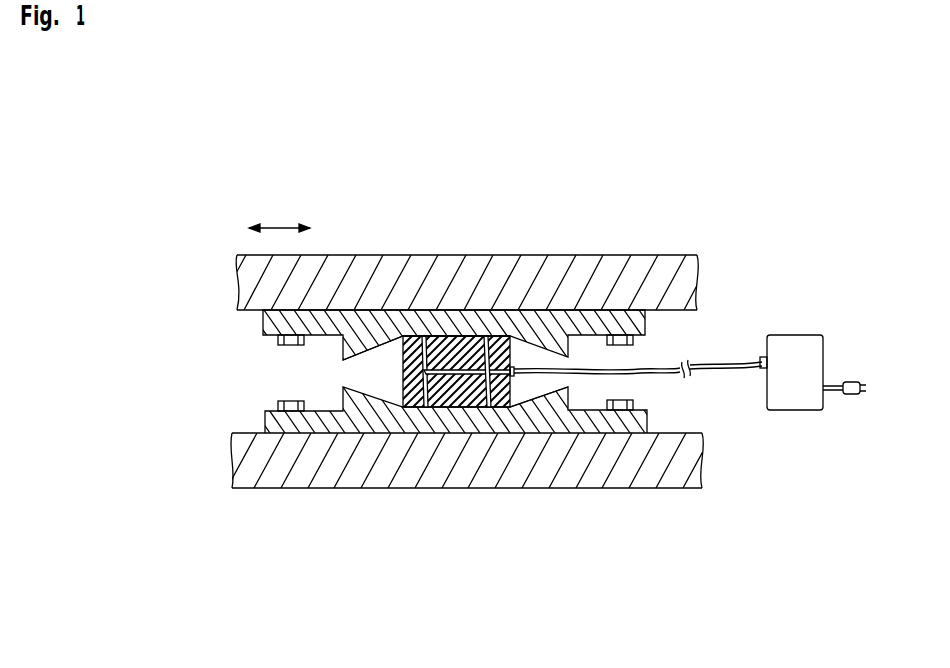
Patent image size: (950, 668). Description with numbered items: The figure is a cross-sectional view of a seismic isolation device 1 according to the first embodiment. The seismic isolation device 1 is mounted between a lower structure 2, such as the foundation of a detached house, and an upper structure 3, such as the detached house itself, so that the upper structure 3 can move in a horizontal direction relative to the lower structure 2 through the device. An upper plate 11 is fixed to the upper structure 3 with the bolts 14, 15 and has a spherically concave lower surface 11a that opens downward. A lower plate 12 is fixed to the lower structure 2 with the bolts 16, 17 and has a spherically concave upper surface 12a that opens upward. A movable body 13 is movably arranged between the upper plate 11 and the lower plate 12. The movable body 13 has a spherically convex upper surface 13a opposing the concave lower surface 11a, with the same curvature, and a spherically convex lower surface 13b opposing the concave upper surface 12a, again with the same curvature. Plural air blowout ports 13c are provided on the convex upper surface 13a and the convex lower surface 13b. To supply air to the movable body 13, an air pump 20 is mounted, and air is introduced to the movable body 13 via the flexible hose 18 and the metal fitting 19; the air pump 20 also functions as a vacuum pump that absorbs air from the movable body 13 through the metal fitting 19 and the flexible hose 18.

The seismic isolation device 1 is at (218, 333).
The lower structure 2 is at (666, 488).
The upper structure 3 is at (653, 255).
The upper plate 11 is at (558, 310).
The spherically concave lower surface 11a is at (376, 350).
The lower plate 12 is at (583, 425).
The spherically concave upper surface 12a is at (518, 393).
The movable body 13 is at (470, 373).
The spherically convex upper surface 13a is at (458, 335).
The spherically convex lower surface 13b is at (427, 408).
The air blowout ports 13c is at (503, 405).
The bolt 14 is at (278, 341).
The bolt 15 is at (620, 349).
The bolt 16 is at (278, 406).
The bolt 17 is at (620, 389).
The flexible hose 18 is at (722, 371).
The metal fitting 19 is at (516, 340).
The air pump 20 is at (797, 335).